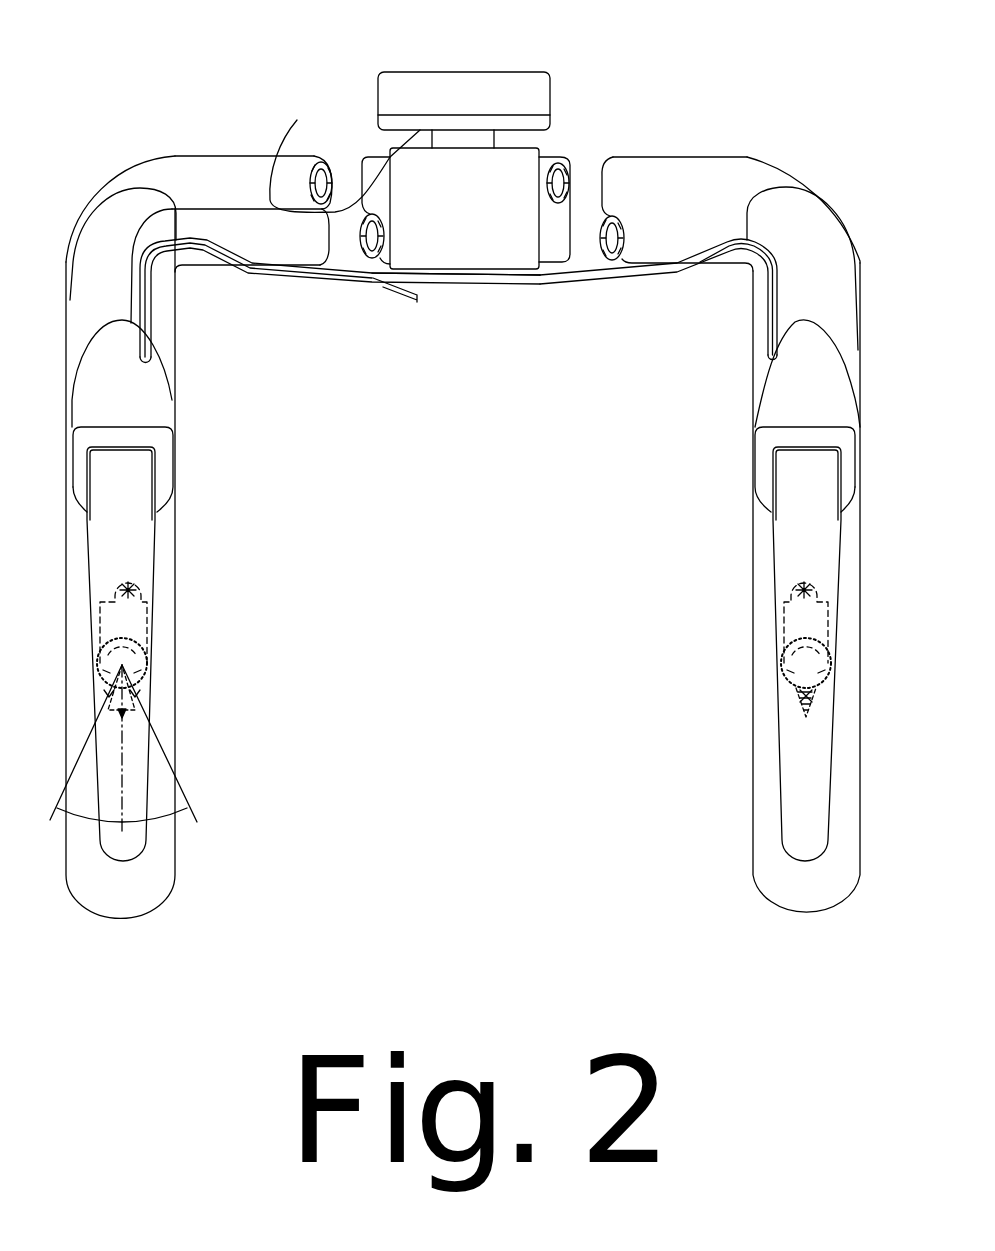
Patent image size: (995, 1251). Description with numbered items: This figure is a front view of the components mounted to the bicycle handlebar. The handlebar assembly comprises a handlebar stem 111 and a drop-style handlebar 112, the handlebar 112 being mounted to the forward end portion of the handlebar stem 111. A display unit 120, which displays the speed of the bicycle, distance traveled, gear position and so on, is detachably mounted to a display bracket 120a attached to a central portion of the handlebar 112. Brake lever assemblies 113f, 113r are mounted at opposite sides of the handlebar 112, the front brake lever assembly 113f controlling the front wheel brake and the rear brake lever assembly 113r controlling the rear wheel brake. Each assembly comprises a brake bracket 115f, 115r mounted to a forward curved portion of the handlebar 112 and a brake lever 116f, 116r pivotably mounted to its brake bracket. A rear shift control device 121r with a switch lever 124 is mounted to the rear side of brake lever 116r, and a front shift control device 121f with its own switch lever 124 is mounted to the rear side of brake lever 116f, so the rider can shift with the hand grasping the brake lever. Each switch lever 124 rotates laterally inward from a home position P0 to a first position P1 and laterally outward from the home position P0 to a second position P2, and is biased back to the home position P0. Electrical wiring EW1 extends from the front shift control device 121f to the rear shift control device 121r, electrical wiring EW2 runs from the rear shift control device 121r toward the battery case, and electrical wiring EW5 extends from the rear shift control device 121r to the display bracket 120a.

The handlebar 112 is at (752, 180).
The display unit 120 is at (476, 82).
The display bracket 120a is at (485, 123).
The handlebar stem 111 is at (493, 258).
The electrical wiring EW5 is at (339, 147).
The electrical wiring EW1 is at (470, 285).
The electrical wiring EW2 is at (380, 288).
The brake bracket 115r is at (143, 372).
The brake bracket 115f is at (782, 387).
The brake lever assembly 113r is at (187, 370).
The brake lever assembly 113f is at (741, 380).
The brake lever 116r is at (132, 553).
The brake lever 116f is at (798, 547).
The rear shift control device 121r is at (151, 645).
The front shift control device 121f is at (785, 650).
The switch lever 124 is at (150, 705).
The home position P0 is at (124, 785).
The first position P1 is at (177, 765).
The second position P2 is at (69, 765).